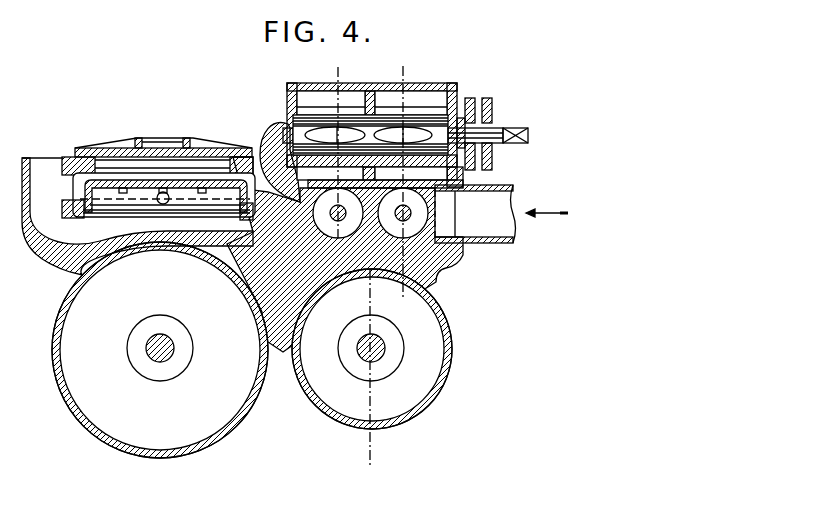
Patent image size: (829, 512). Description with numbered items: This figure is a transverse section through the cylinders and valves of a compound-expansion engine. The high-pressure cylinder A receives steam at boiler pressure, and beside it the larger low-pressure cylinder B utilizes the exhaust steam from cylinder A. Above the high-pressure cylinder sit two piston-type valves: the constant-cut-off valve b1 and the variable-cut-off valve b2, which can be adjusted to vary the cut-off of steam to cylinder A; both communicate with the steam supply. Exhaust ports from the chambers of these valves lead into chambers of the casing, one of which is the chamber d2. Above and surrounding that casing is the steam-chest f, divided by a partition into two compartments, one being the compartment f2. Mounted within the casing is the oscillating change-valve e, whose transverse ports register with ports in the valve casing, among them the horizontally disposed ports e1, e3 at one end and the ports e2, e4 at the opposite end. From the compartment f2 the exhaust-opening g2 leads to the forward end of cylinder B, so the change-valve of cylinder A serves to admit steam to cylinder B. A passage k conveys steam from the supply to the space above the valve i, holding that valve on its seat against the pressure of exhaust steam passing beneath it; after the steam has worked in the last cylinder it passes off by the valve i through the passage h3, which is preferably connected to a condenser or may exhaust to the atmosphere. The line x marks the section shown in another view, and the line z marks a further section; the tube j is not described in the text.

The high-pressure cylinder A is at (427, 363).
The low-pressure cylinder B is at (160, 350).
The passage h3 is at (47, 167).
The valve i is at (138, 183).
The passage k is at (250, 147).
The exhaust-opening g2 is at (267, 143).
The steam-chest f is at (445, 83).
The compartment f2 is at (310, 100).
The valve e is at (410, 117).
The port e2 is at (335, 135).
The port e4 is at (345, 135).
The port e1 is at (403, 135).
The port e3 is at (412, 135).
The chamber d2 is at (453, 178).
The tube j is at (495, 203).
The valve b1 is at (333, 224).
The valve b2 is at (410, 230).
The section line z is at (337, 143).
The section line x is at (383, 266).